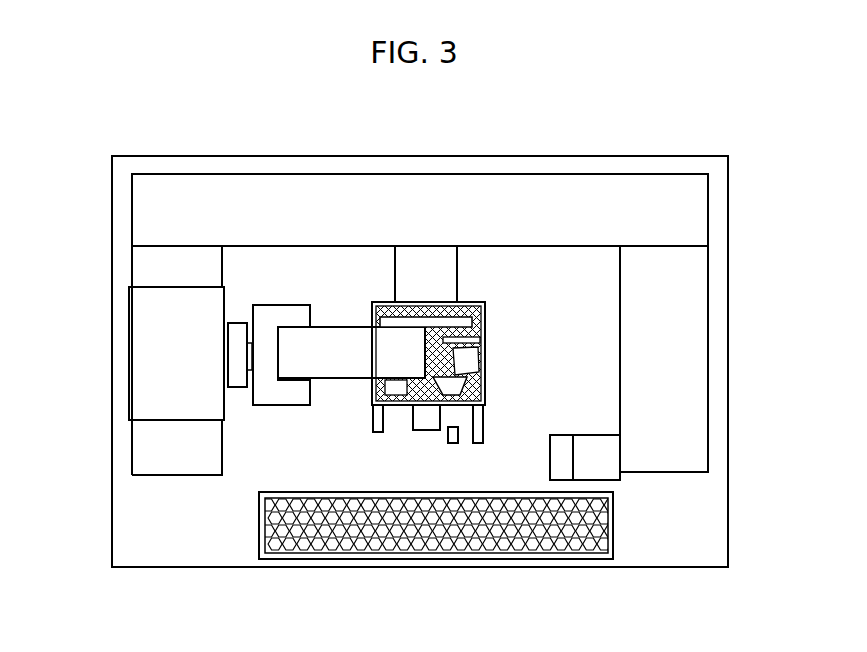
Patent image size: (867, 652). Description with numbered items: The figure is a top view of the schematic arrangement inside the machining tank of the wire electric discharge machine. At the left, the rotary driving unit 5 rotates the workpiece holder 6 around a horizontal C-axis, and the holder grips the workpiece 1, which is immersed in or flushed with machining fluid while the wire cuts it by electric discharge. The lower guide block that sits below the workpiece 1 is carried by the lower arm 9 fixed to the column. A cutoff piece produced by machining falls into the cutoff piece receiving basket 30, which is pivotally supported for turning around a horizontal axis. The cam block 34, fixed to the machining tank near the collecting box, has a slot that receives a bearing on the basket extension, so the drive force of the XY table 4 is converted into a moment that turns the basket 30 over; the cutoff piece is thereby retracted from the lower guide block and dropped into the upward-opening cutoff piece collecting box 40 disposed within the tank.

The workpiece 1 is at (335, 342).
The XY table 4 is at (187, 212).
The rotary driving unit 5 is at (165, 307).
The workpiece holder 6 is at (267, 380).
The lower arm 9 is at (428, 263).
The cutoff piece receiving basket 30 is at (485, 405).
The cam block 34 is at (562, 468).
The cutoff piece collecting box 40 is at (344, 540).